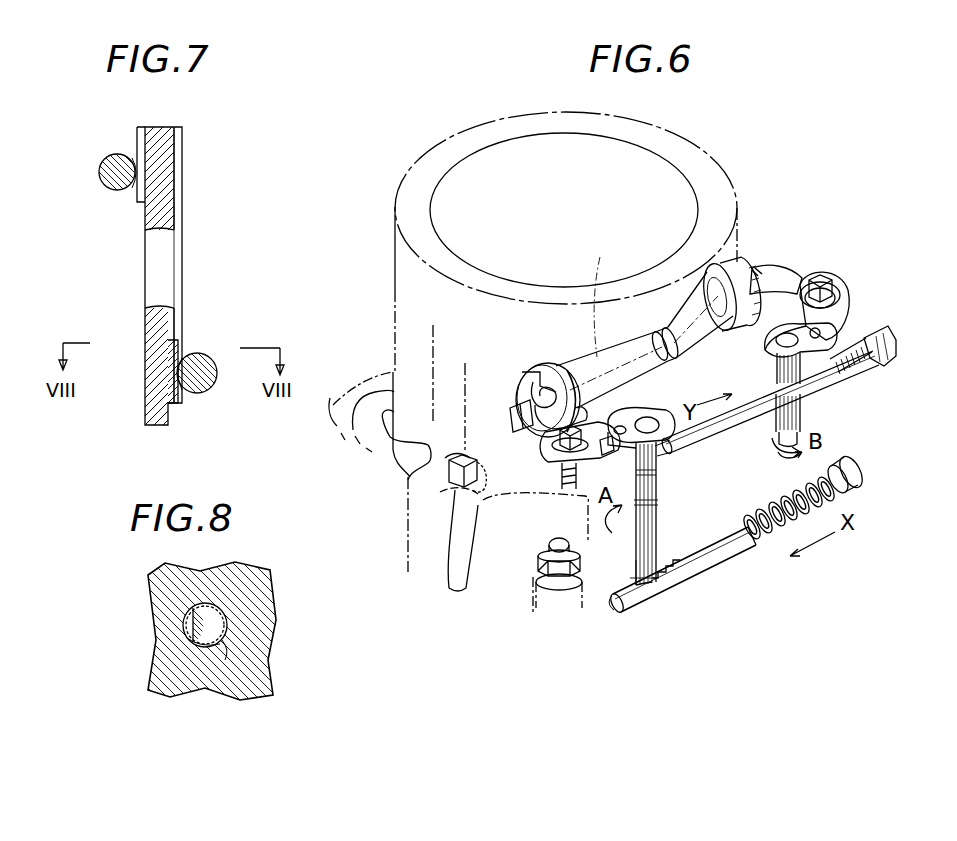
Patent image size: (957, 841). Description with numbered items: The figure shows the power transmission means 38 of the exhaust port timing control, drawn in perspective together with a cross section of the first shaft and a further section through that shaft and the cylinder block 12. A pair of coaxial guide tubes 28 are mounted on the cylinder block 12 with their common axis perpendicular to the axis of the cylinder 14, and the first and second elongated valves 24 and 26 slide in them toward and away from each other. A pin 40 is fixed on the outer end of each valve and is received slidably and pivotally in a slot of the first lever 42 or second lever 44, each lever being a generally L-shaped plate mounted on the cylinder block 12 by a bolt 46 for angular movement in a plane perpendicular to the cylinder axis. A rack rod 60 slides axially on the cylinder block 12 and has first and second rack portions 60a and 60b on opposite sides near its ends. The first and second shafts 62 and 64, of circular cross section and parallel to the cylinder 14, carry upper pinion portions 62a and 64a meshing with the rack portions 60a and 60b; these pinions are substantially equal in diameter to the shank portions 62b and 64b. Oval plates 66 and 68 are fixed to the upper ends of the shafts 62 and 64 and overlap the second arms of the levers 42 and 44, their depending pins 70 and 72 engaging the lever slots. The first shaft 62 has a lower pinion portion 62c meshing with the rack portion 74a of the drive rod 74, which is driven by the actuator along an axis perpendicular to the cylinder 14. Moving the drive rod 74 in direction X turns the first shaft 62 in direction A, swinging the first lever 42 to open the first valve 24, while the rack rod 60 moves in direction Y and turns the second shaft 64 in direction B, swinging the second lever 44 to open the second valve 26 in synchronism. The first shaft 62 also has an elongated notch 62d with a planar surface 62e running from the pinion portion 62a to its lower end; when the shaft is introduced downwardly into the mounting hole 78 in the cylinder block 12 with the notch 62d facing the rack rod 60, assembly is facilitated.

In FIG. 8, the cylinder block 12 is at (165, 580).
In FIG. 6, the cylinder block 12 is at (418, 518).
In FIG. 6, the cylinder 14 is at (668, 170).
In FIG. 6, the first valve 24 is at (612, 326).
In FIG. 6, the second valve 26 is at (680, 285).
In FIG. 6, the guide tube 28 is at (712, 286).
In FIG. 6, the power transmission means 38 is at (504, 352).
In FIG. 6, the pin 40 is at (534, 395).
In FIG. 6, the first lever 42 is at (545, 446).
In FIG. 6, the second lever 44 is at (846, 288).
In FIG. 6, the bolt 46 is at (560, 483).
In FIG. 7, the rack rod 60 is at (108, 158).
In FIG. 6, the rack rod 60 is at (900, 346).
In FIG. 6, the first rack portion 60a is at (672, 455).
In FIG. 6, the second rack portion 60b is at (838, 374).
In FIG. 7, the first shaft 62 is at (160, 262).
In FIG. 8, the first shaft 62 is at (225, 617).
In FIG. 6, the first shaft 62 is at (660, 546).
In FIG. 7, the pinion portion 62a is at (178, 182).
In FIG. 6, the pinion portion 62a is at (660, 478).
In FIG. 6, the shank portion 62b is at (660, 508).
In FIG. 7, the pinion portion 62c is at (180, 403).
In FIG. 8, the pinion portion 62c is at (226, 658).
In FIG. 6, the pinion portion 62c is at (635, 582).
In FIG. 7, the notch 62d is at (138, 208).
In FIG. 8, the notch 62d is at (193, 625).
In FIG. 7, the planar surface 62e is at (146, 328).
In FIG. 8, the planar surface 62e is at (172, 648).
In FIG. 6, the second shaft 64 is at (802, 418).
In FIG. 6, the pinion portion 64a is at (778, 368).
In FIG. 6, the shank portion 64b is at (780, 436).
In FIG. 6, the first oval plate 66 is at (652, 418).
In FIG. 6, the second oval plate 68 is at (778, 342).
In FIG. 6, the pin 70 is at (636, 426).
In FIG. 6, the pin 72 is at (832, 332).
In FIG. 7, the drive rod 74 is at (212, 390).
In FIG. 6, the drive rod 74 is at (700, 562).
In FIG. 6, the rack portion 74a is at (625, 605).
In FIG. 8, the mounting hole 78 is at (186, 612).